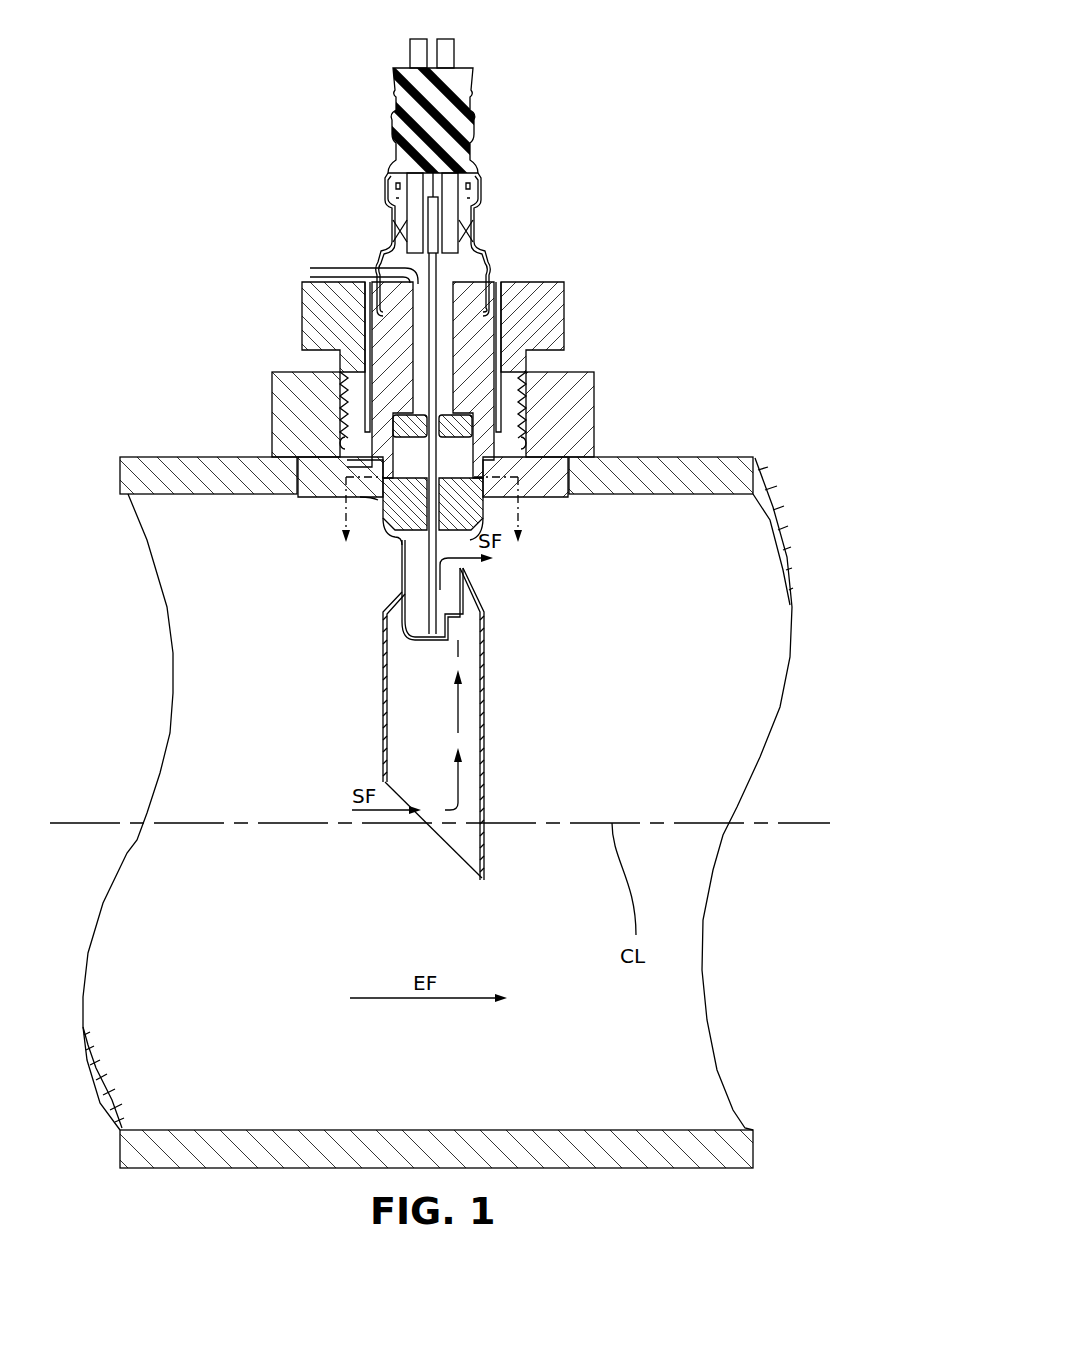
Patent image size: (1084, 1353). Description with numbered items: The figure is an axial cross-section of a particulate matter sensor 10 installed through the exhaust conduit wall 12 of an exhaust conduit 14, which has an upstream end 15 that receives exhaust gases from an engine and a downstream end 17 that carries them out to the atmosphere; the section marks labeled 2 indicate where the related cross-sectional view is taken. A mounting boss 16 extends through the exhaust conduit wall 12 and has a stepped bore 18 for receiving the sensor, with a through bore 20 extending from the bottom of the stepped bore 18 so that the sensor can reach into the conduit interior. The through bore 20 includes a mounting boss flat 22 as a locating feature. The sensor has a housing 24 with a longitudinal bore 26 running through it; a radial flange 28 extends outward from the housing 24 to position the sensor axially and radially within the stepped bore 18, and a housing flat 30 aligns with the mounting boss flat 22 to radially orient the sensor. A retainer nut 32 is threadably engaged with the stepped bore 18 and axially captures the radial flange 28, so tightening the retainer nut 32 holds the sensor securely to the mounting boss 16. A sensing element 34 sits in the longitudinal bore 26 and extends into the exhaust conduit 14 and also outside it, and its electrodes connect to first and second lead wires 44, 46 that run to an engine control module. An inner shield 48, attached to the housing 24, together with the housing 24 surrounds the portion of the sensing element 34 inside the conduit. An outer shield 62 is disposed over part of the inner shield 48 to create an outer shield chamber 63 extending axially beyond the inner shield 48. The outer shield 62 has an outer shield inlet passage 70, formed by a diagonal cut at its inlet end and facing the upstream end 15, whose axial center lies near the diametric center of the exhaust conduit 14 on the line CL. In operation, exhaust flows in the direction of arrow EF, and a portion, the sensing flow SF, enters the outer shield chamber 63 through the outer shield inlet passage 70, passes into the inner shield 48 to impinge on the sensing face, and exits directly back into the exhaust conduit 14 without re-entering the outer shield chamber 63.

The particulate matter sensor 10 is at (532, 186).
The exhaust conduit wall 12 is at (592, 472).
The exhaust conduit 14 is at (702, 522).
The upstream end 15 is at (222, 593).
The mounting boss 16 is at (280, 393).
The downstream end 17 is at (729, 653).
The stepped bore 18 is at (348, 455).
The through bore 20 is at (490, 460).
The mounting boss flat 22 is at (372, 463).
The housing 24 is at (487, 337).
The longitudinal bore 26 is at (312, 270).
The radial flange 28 is at (507, 445).
The housing flat 30 is at (378, 498).
The retainer nut 32 is at (303, 297).
The sensing element 34 is at (433, 260).
The first lead wire 44 is at (412, 53).
The second lead wire 46 is at (455, 53).
The inner shield 48 is at (390, 552).
The outer shield 62 is at (372, 685).
The outer shield chamber 63 is at (462, 740).
The outer shield inlet passage 70 is at (436, 846).
The section line 2 is at (436, 511).